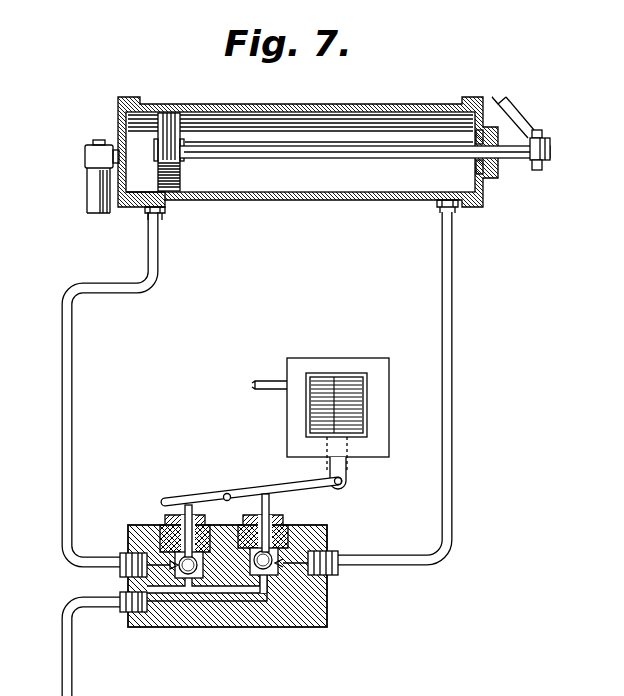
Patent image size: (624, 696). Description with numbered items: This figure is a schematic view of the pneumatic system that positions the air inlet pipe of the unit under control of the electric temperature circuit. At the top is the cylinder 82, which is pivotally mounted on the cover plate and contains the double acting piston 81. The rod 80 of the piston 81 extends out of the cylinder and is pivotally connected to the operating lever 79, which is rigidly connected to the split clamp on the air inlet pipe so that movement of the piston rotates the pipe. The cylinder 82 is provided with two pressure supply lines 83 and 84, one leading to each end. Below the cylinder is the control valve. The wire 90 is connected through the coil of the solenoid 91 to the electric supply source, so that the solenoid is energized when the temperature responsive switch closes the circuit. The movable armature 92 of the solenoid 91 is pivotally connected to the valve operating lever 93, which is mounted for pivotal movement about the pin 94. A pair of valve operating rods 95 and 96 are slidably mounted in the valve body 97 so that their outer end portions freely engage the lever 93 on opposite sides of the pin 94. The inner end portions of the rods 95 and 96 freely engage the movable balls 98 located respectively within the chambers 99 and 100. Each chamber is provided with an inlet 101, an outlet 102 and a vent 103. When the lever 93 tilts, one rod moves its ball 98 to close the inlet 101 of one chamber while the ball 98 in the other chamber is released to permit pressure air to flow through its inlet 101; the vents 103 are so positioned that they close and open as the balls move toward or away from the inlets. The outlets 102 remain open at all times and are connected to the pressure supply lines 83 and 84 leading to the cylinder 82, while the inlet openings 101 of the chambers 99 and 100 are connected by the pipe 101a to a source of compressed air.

The operating lever 79 is at (523, 115).
The rod 80 is at (310, 158).
The double acting piston 81 is at (185, 130).
The cylinder 82 is at (367, 104).
The pressure supply line 83 is at (158, 262).
The pressure supply line 84 is at (454, 270).
The wire 90 is at (256, 380).
The solenoid 91 is at (389, 395).
The movable armature 92 is at (348, 468).
The valve operating lever 93 is at (256, 489).
The pin 94 is at (229, 492).
The valve operating rod 95 is at (184, 508).
The valve operating rod 96 is at (270, 506).
The valve body 97 is at (327, 611).
The movable ball 98 is at (173, 559).
The chamber 99 is at (168, 552).
The chamber 100 is at (263, 586).
The inlet 101 is at (221, 598).
The pipe 101a is at (68, 656).
The outlet 102 is at (338, 552).
The vent 103 is at (183, 548).